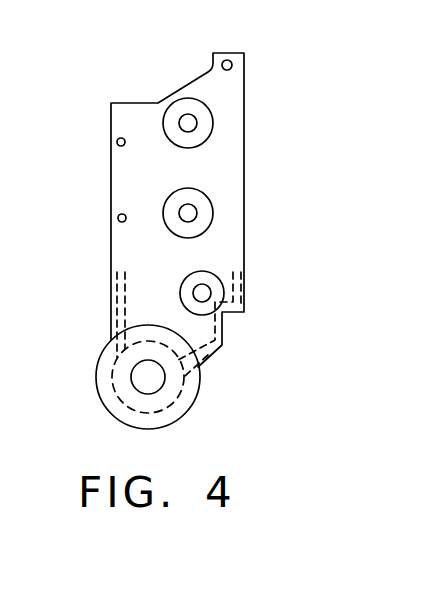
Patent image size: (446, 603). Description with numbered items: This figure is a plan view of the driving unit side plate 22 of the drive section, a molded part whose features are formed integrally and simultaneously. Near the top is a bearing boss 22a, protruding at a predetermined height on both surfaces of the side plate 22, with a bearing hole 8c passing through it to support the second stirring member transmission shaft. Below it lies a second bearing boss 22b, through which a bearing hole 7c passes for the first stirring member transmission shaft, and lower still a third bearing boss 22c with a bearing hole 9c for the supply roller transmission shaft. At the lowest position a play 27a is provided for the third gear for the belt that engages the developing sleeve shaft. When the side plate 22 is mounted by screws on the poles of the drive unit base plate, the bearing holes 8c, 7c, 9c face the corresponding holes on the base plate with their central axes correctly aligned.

The driving unit side plate 22 is at (243, 44).
The bearing boss 22a is at (211, 123).
The bearing boss 22b is at (206, 213).
The bearing boss 22c is at (212, 293).
The bearing hole 8c is at (180, 118).
The bearing hole 7c is at (185, 212).
The bearing hole 9c is at (206, 298).
The play 27a is at (198, 404).